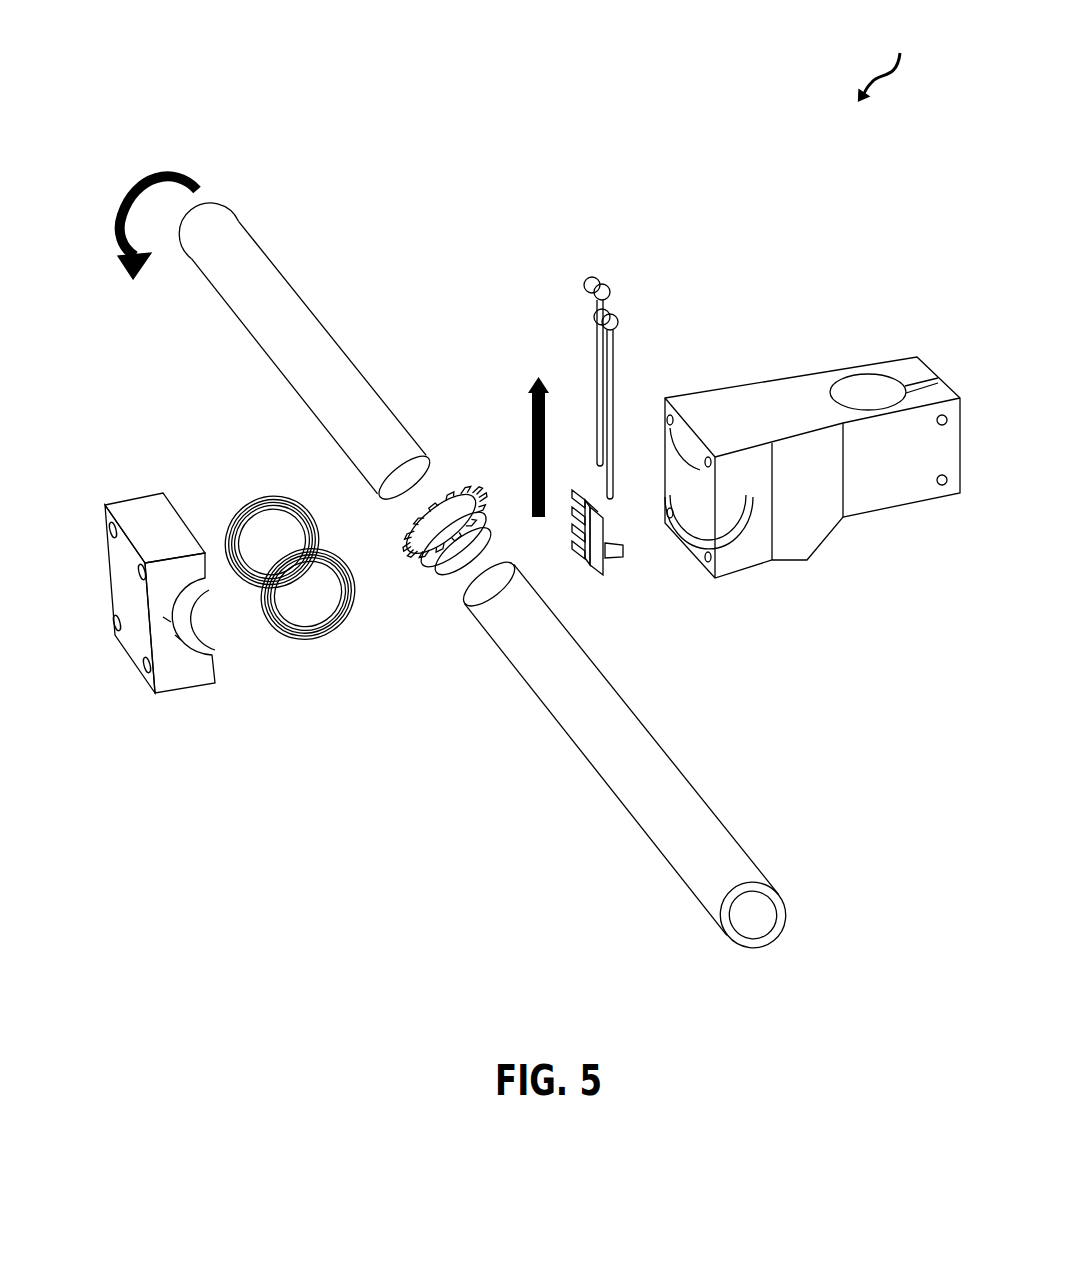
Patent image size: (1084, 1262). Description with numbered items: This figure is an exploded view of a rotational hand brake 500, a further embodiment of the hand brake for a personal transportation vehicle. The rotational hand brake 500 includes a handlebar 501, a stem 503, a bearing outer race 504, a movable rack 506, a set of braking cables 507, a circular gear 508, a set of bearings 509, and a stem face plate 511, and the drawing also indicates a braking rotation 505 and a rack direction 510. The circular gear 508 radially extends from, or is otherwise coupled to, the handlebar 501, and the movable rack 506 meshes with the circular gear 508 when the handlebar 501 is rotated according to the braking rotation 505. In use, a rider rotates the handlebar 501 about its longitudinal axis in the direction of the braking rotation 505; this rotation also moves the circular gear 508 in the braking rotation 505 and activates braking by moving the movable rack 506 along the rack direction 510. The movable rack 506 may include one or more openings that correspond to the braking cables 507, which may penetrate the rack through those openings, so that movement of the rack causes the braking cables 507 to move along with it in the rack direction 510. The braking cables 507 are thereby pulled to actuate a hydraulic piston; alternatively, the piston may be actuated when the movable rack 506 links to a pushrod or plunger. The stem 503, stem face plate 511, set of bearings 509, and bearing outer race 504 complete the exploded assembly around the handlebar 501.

The rotational hand brake 500 is at (889, 60).
The handlebar 501 is at (719, 813).
The stem 503 is at (895, 360).
The bearing outer race 504 is at (698, 487).
The braking rotation 505 is at (157, 209).
The movable rack 506 is at (612, 562).
The set of braking cables 507 is at (612, 340).
The circular gear 508 is at (478, 495).
The set of bearings 509 is at (268, 568).
The rack direction 510 is at (533, 408).
The stem face plate 511 is at (120, 650).